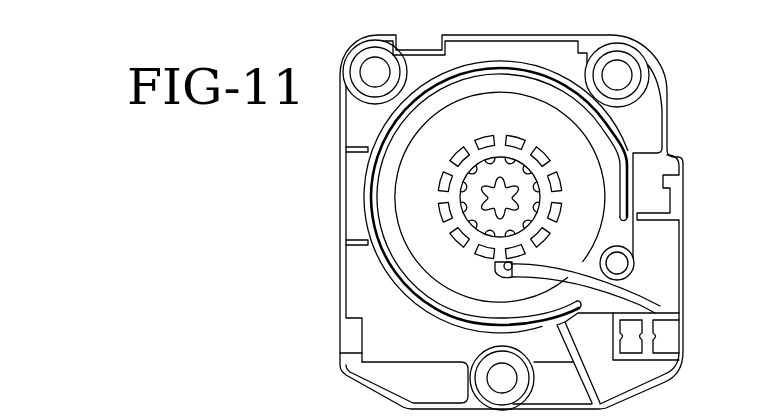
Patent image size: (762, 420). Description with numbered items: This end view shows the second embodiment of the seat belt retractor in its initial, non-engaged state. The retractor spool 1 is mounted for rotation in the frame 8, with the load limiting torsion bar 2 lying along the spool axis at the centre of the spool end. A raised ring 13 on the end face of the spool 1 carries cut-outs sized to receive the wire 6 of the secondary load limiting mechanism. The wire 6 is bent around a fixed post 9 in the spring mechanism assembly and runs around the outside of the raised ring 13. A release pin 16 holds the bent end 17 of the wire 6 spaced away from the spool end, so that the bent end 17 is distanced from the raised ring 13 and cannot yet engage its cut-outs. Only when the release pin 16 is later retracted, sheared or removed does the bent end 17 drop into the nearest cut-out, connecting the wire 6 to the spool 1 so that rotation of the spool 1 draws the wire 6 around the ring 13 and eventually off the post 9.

The retractor spool 1 is at (570, 158).
The load limiting torsion bar 2 is at (491, 199).
The wire 6 is at (370, 167).
The frame 8 is at (648, 103).
The fixed post 9 is at (620, 263).
The raised ring 13 is at (447, 210).
The release pin 16 is at (510, 268).
The bent end 17 is at (496, 272).